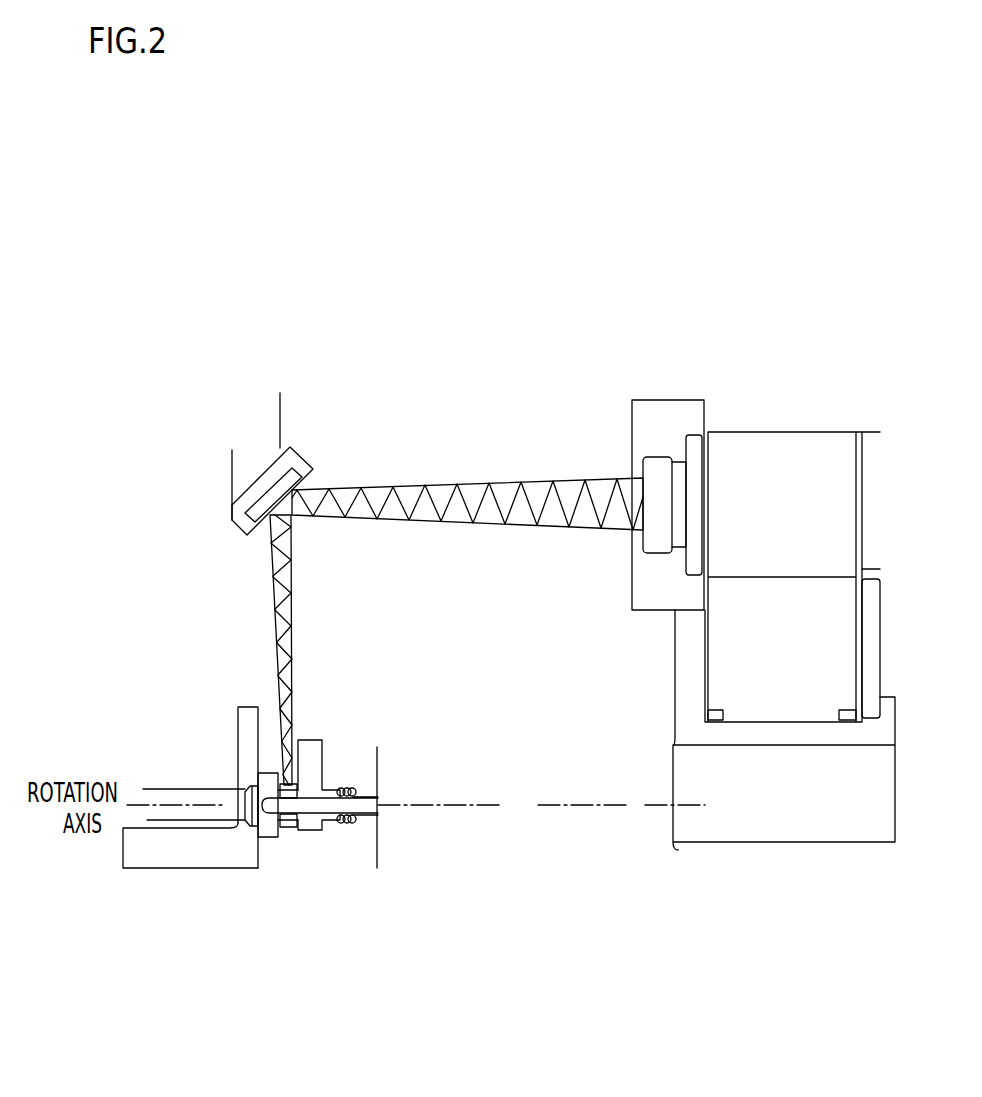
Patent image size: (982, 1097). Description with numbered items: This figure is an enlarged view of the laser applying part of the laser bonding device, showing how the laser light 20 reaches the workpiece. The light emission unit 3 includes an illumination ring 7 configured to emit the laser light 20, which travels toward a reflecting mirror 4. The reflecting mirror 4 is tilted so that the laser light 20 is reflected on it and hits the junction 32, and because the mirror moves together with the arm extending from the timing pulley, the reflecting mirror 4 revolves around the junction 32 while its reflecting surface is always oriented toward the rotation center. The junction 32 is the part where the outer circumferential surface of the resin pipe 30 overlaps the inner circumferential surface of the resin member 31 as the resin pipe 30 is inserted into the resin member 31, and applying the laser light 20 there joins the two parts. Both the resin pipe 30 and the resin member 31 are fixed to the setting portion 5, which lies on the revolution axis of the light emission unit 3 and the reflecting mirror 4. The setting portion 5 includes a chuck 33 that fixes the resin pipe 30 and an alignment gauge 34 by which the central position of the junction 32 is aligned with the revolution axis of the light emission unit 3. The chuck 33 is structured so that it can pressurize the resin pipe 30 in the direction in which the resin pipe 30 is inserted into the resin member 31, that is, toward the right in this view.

The light emission unit 3 is at (782, 367).
The reflecting mirror 4 is at (253, 495).
The setting portion 5 is at (266, 952).
The illumination ring 7 is at (658, 398).
The laser light 20 is at (277, 619).
The resin pipe 30 is at (160, 788).
The resin member 31 is at (313, 787).
The junction 32 is at (283, 780).
The chuck 33 is at (245, 755).
The alignment gauge 34 is at (366, 817).